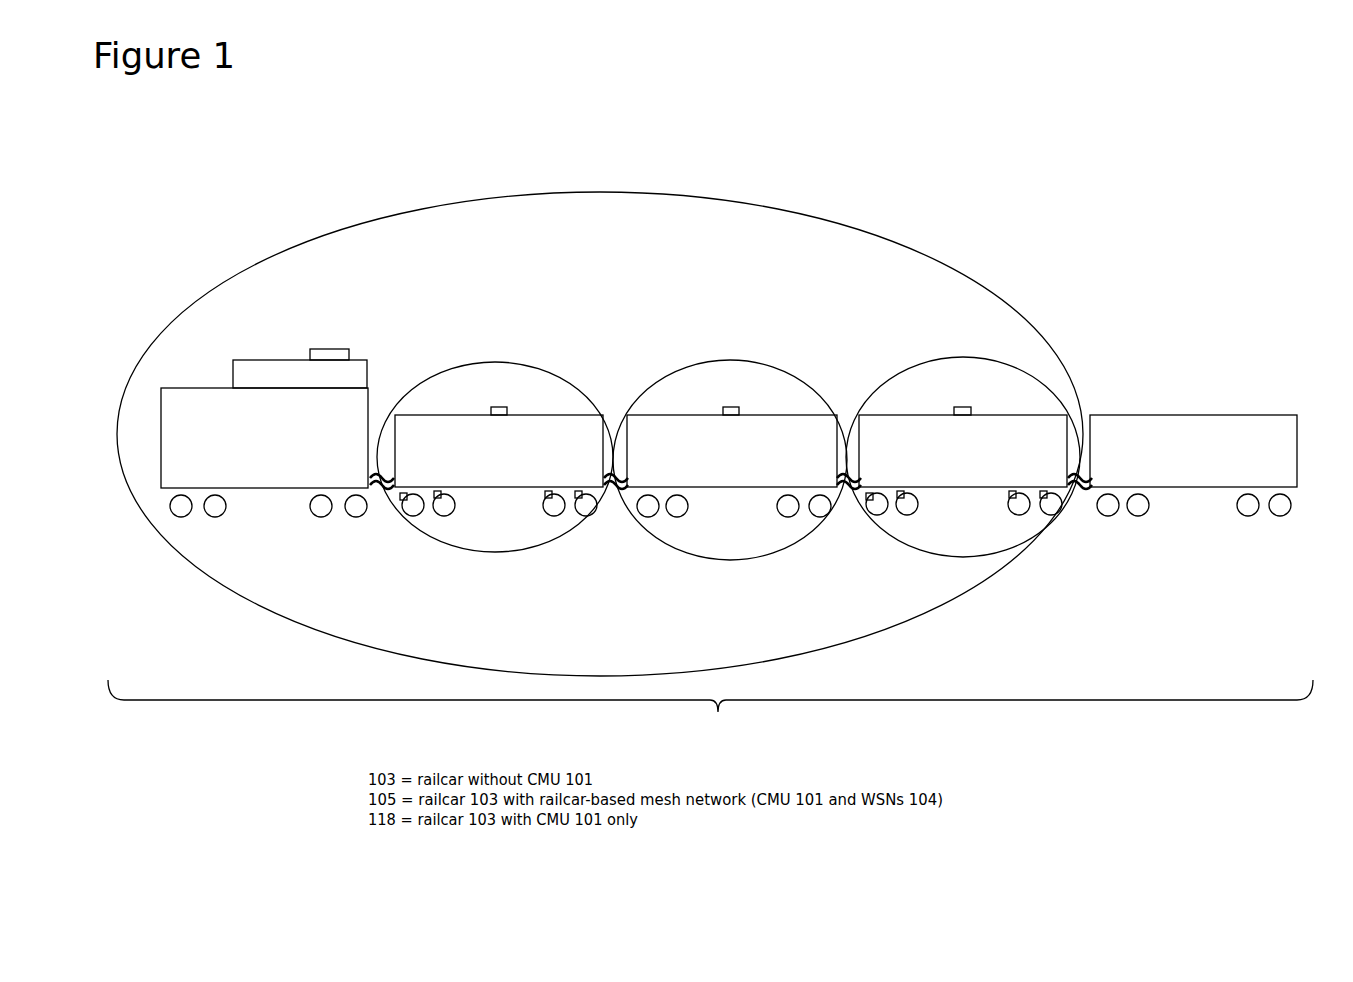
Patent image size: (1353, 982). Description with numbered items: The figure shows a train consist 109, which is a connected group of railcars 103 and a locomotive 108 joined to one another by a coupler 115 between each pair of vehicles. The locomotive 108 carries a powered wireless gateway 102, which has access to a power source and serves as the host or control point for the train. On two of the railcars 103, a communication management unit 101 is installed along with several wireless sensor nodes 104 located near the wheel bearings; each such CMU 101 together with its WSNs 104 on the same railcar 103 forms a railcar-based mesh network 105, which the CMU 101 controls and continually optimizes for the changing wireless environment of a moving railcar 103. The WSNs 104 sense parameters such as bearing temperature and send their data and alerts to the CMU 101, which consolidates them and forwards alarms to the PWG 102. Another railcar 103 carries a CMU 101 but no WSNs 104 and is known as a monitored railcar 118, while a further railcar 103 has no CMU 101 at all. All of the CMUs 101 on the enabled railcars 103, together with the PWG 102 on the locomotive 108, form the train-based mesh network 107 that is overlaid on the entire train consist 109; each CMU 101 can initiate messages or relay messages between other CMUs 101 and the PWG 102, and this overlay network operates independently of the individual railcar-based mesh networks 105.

The communication management unit 101 is at (1003, 347).
The powered wireless gateway 102 is at (332, 349).
The railcar 103 is at (846, 466).
The wireless sensor node 104 is at (407, 499).
The railcar-based mesh network 105 is at (902, 376).
The train-based mesh network 107 is at (292, 249).
The locomotive 108 is at (264, 438).
The train consist 109 is at (710, 725).
The coupler 115 is at (381, 490).
The monitored railcar 118 is at (762, 558).